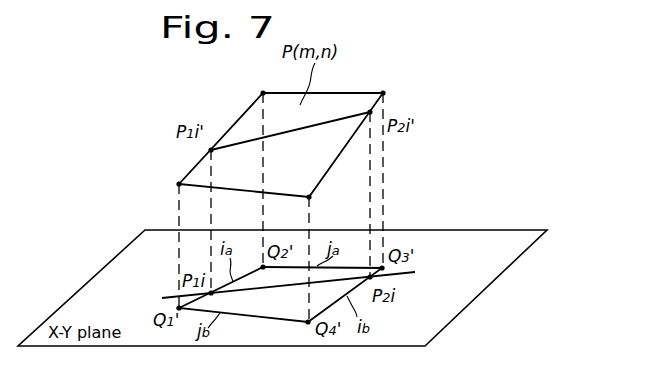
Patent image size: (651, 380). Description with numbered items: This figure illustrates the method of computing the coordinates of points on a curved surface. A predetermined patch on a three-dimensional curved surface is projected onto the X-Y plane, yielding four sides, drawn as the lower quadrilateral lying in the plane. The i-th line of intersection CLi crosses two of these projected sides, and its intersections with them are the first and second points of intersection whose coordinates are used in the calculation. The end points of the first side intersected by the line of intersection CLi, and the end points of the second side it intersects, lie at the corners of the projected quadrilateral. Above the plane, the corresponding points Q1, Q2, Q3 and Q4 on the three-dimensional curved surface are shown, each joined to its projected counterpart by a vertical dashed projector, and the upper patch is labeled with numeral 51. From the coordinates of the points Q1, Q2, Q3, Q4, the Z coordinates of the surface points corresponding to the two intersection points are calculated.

The planar patch P(m,n) defined by points Q1-Q4 51 is at (352, 101).
The point on three-dimensional curved surface Q1 is at (166, 239).
The point on three-dimensional curved surface Q2 is at (253, 169).
The point on three-dimensional curved surface Q3 is at (397, 175).
The point on three-dimensional curved surface Q4 is at (322, 255).
The i-th line of intersection CLi is at (407, 279).